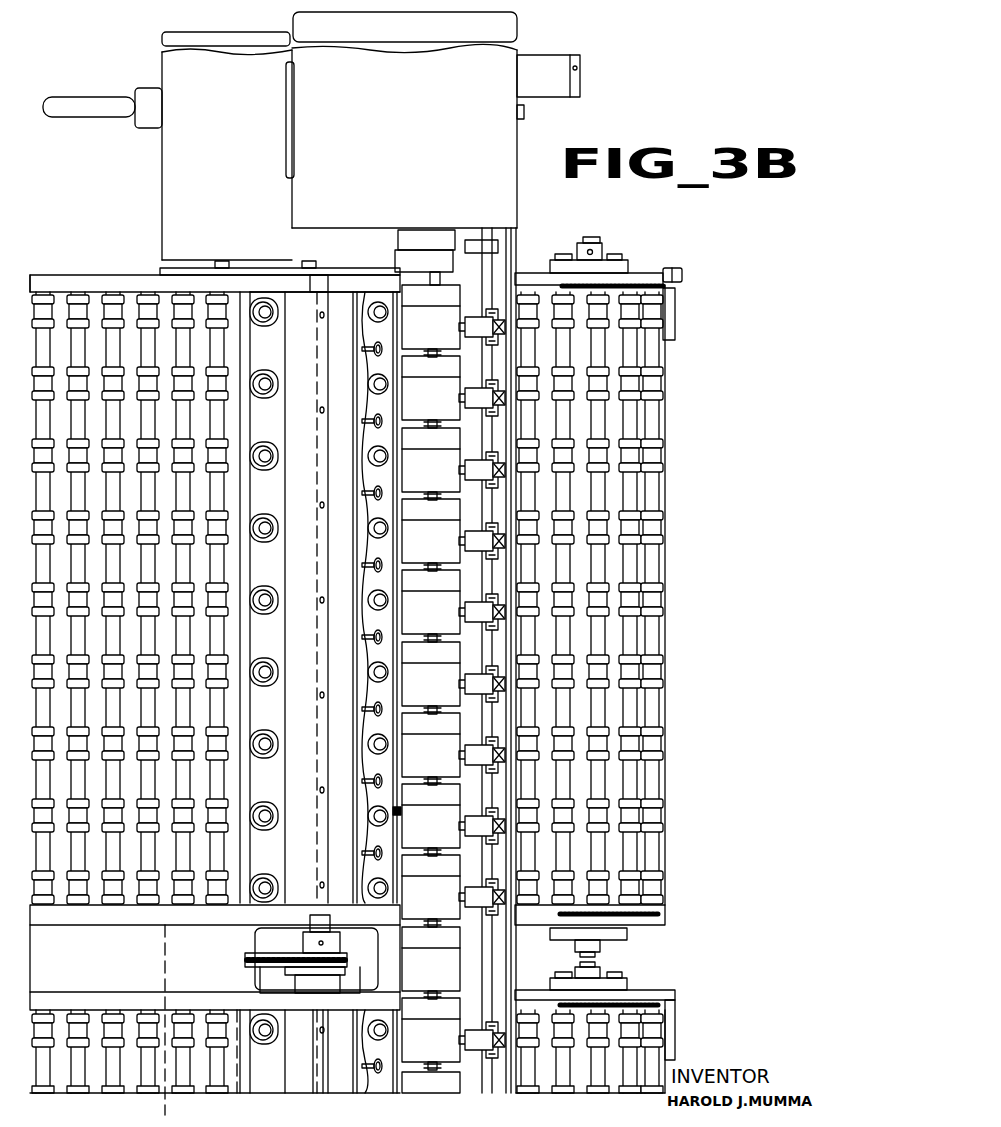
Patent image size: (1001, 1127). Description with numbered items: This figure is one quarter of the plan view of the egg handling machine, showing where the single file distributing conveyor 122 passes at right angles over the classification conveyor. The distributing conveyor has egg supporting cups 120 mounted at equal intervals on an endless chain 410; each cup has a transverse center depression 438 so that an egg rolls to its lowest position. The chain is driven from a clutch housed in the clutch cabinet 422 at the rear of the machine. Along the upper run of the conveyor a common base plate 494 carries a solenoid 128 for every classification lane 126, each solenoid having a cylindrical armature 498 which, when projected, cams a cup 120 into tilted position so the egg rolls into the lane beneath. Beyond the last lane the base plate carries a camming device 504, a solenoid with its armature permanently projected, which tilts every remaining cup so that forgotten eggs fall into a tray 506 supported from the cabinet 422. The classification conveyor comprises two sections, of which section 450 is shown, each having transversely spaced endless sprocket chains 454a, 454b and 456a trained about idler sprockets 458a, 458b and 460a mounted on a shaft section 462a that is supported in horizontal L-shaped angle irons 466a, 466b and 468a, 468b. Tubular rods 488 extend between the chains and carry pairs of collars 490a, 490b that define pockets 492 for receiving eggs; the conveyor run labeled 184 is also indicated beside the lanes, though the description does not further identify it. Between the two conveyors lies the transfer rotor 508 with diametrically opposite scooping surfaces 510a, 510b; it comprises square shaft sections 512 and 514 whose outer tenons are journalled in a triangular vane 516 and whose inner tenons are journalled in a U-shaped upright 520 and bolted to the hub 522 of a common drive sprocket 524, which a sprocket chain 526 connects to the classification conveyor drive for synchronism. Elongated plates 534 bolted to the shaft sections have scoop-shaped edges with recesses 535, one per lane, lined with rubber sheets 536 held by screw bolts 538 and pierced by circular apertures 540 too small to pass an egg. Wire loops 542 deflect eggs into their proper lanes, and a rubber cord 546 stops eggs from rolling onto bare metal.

The tray 506 is at (238, 188).
The clutch cabinet 422 is at (503, 191).
The rotor 508 is at (298, 328).
The triangular vane 516 is at (309, 275).
The pockets 492 is at (198, 530).
The elongated plates 534 is at (290, 513).
The scooping surface 510a is at (379, 552).
The scooping surface 510b is at (253, 655).
The recesses 535 is at (270, 686).
The rubber sheets 536 is at (358, 447).
The screw bolts 538 is at (366, 351).
The wire loops 542 is at (368, 777).
The rubber cord 546 is at (366, 845).
The apertures 540 is at (348, 790).
The shaft section 512 is at (325, 850).
The single file conveyor 122 is at (432, 246).
The camming device 504 is at (500, 246).
The cylindrical armature 498 is at (478, 250).
The base plate 494 is at (500, 302).
The cups 120 is at (431, 689).
The solenoids 128 is at (476, 388).
The endless chain 410 is at (442, 425).
The transverse center depression 438 is at (446, 655).
The classification lanes 126 is at (656, 318).
The chain 184 is at (666, 580).
The collar 490a is at (660, 628).
The collar 490b is at (625, 757).
The classification conveyor section 450 is at (668, 718).
The tubular rods 488 is at (600, 792).
The shaft section 462a is at (592, 240).
The idler sprocket 458a is at (608, 284).
The sprocket chain 454a is at (662, 285).
The L-shaped angle iron 466a is at (672, 272).
The sprocket chain 454b is at (665, 913).
The L-shaped angle iron 466b is at (612, 912).
The idler sprocket 458b is at (607, 918).
The L-shaped angle iron 468b is at (592, 970).
The L-shaped angle iron 468a is at (640, 1013).
The idler sprocket 460a is at (600, 1012).
The sprocket chain 456a is at (660, 1003).
The upright 520 is at (390, 936).
The hub 522 is at (303, 926).
The drive sprocket 524 is at (313, 954).
The sprocket chain 526 is at (285, 956).
The shaft section 514 is at (311, 1014).